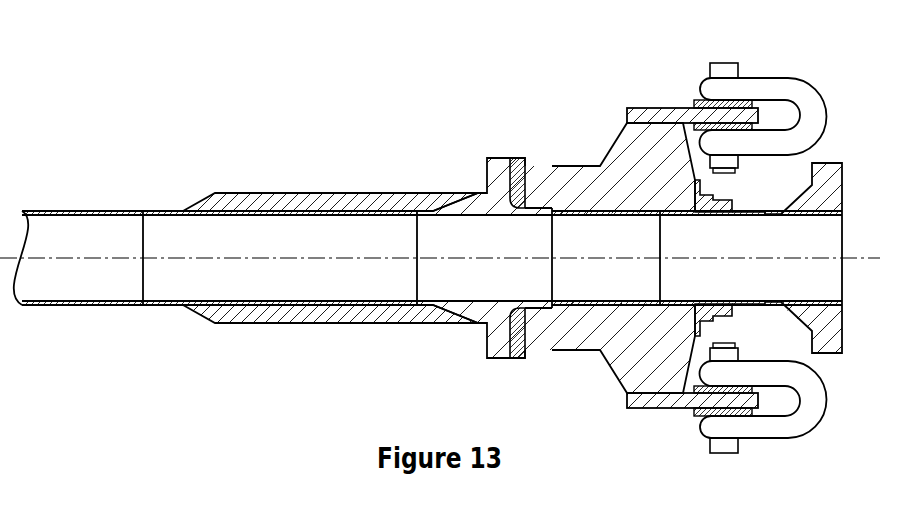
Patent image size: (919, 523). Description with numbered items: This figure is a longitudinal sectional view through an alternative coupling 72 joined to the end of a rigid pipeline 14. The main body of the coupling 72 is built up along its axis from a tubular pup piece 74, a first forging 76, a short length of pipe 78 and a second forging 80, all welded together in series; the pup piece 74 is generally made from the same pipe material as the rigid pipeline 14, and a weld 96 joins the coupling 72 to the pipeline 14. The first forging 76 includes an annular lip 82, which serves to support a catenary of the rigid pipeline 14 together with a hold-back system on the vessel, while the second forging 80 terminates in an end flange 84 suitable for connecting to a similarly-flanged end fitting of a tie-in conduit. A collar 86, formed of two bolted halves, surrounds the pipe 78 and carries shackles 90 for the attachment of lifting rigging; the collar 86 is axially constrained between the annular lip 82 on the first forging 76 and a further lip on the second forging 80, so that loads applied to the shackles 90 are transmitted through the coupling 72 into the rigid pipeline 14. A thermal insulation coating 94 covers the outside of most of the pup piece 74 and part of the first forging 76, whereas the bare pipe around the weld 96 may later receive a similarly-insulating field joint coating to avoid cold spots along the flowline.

The rigid pipeline 14 is at (69, 249).
The coupling 72 is at (412, 118).
The tubular pup piece 74 is at (261, 249).
The first forging 76 is at (473, 249).
The pipe 78 is at (593, 249).
The second forging 80 is at (732, 249).
The annular lip 82 is at (490, 344).
The end flange 84 is at (833, 333).
The collar 86 is at (613, 355).
The shackles 90 is at (793, 85).
The thermal insulation coating 94 is at (310, 198).
The weld 96 is at (143, 267).